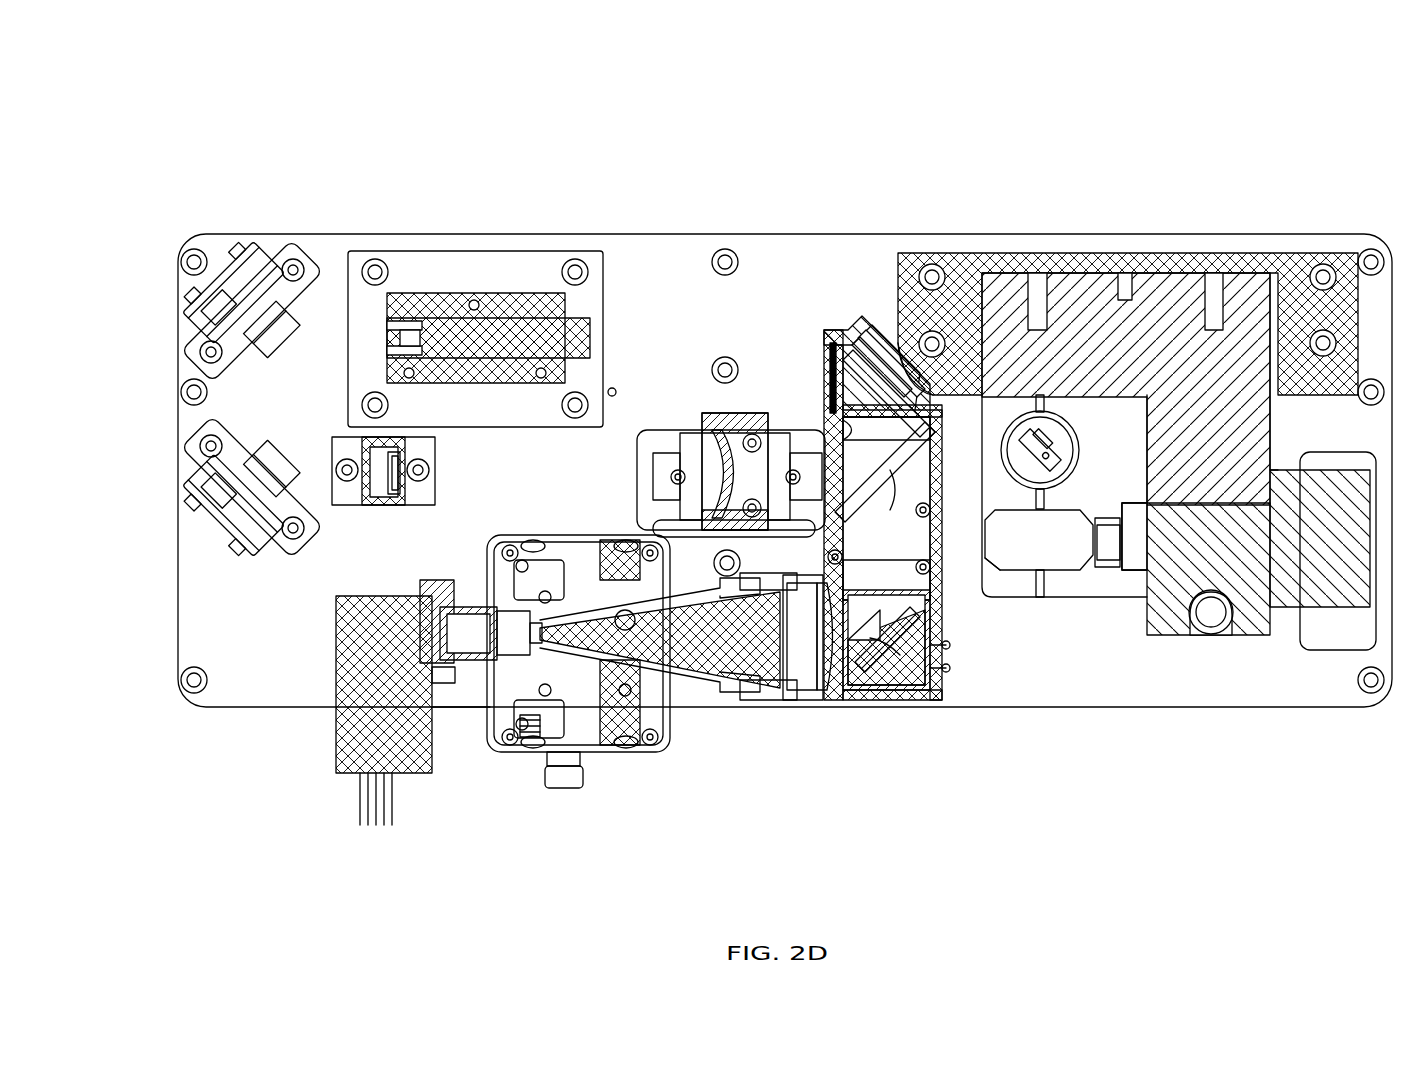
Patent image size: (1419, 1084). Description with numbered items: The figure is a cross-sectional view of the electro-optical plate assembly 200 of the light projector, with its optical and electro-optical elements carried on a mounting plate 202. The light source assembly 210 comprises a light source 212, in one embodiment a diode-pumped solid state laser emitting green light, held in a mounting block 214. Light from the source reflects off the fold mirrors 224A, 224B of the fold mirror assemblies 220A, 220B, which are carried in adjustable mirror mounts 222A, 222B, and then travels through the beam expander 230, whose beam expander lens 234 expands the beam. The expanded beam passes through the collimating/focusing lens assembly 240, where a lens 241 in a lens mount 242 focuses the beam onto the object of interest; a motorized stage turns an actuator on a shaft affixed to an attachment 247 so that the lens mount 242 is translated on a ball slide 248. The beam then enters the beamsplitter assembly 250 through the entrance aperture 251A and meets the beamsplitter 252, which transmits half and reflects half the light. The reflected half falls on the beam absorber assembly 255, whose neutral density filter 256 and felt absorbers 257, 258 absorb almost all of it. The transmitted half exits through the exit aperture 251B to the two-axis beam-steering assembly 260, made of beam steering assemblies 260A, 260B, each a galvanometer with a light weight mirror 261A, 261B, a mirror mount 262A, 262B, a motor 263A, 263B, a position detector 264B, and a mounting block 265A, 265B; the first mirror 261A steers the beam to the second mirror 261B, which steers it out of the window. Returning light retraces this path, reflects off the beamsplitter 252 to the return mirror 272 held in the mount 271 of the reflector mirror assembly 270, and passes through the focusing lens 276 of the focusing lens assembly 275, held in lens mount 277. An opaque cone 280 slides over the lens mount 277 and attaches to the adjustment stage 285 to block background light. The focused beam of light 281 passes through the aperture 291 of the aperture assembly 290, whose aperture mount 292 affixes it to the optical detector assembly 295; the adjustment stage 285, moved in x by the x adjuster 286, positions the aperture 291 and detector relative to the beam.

The electro-optical plate assembly 200 is at (651, 118).
The mounting plate 202 is at (1322, 707).
The light source assembly 210 is at (472, 298).
The light source 212 is at (483, 226).
The mounting block 214 is at (505, 293).
The fold mirror assembly 220A is at (241, 274).
The adjustable mirror mount 222A is at (234, 293).
The fold mirror 224A is at (250, 300).
The fold mirror assembly 220B is at (226, 513).
The adjustable mirror mount 222B is at (234, 505).
The fold mirror 224B is at (222, 555).
The beam expander 230 is at (330, 598).
The beam expander lens 234 is at (367, 505).
The collimating/focusing lens assembly 240 is at (716, 343).
The lens 241 is at (712, 430).
The lens mount 242 is at (765, 415).
The attachment 247 is at (795, 433).
The ball slide 248 is at (650, 430).
The beamsplitter assembly 250 is at (1134, 476).
The entrance aperture 251A is at (935, 500).
The exit aperture 251B is at (935, 560).
The beamsplitter 252 is at (935, 470).
The beam absorber assembly 255 is at (895, 291).
The neutral density filter 256 is at (912, 390).
The felt absorber 257 is at (925, 390).
The felt absorber 258 is at (878, 350).
The two-axis beam-steering assembly 260 is at (1155, 85).
The beam steering assembly 260A is at (1136, 185).
The beam steering assembly 260B is at (1175, 770).
The light weight mirror 261A is at (1065, 460).
The light weight mirror 261B is at (1038, 530).
The mirror mount 262A is at (1058, 460).
The mirror mount 262B is at (1106, 570).
The motor 263A is at (1060, 466).
The motor 263B is at (1210, 637).
The position detector 264B is at (1300, 635).
The mounting block 265A is at (1105, 560).
The mounting block 265B is at (1257, 615).
The reflector mirror assembly 270 is at (918, 488).
The mount 271 is at (898, 690).
The return mirror 272 is at (855, 690).
The focusing lens assembly 275 is at (686, 716).
The focusing lens 276 is at (822, 700).
The lens mount 277 is at (790, 700).
The opaque cone 280 is at (602, 702).
The focused beam of light 281 is at (745, 700).
The adjustment stage 285 is at (560, 798).
The x adjuster 286 is at (555, 740).
The aperture assembly 290 is at (431, 722).
The aperture 291 is at (545, 660).
The aperture mount 292 is at (430, 770).
The optical detector assembly 295 is at (348, 788).